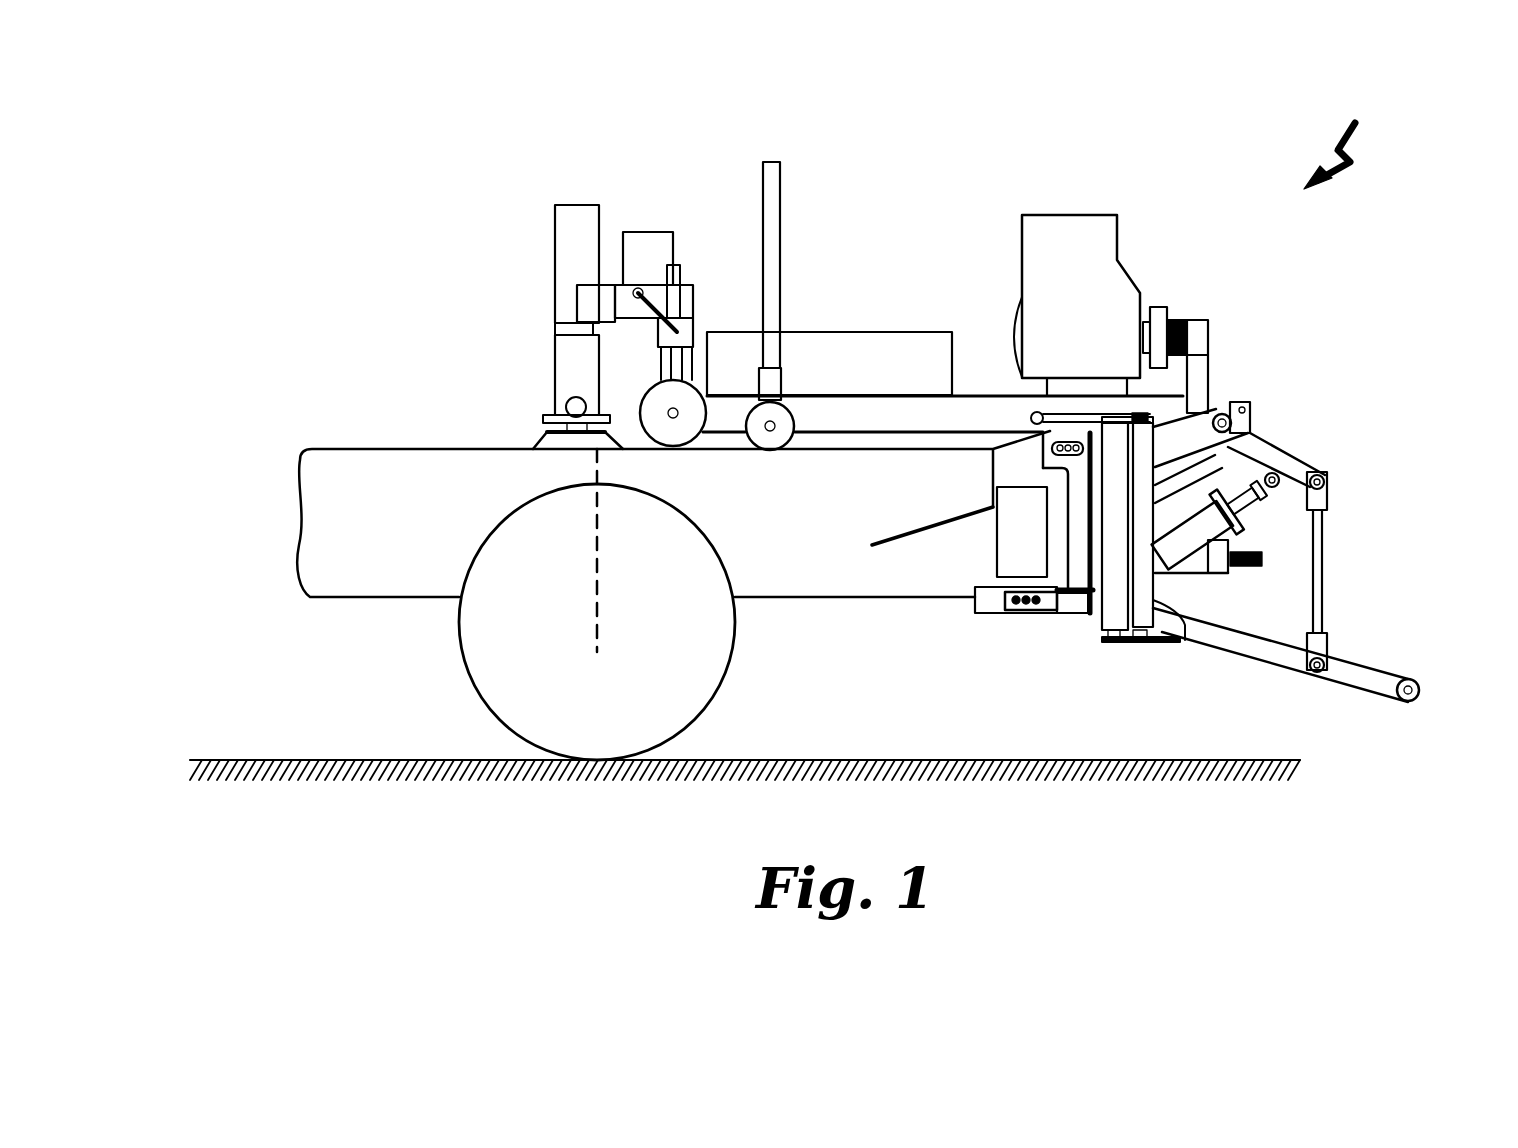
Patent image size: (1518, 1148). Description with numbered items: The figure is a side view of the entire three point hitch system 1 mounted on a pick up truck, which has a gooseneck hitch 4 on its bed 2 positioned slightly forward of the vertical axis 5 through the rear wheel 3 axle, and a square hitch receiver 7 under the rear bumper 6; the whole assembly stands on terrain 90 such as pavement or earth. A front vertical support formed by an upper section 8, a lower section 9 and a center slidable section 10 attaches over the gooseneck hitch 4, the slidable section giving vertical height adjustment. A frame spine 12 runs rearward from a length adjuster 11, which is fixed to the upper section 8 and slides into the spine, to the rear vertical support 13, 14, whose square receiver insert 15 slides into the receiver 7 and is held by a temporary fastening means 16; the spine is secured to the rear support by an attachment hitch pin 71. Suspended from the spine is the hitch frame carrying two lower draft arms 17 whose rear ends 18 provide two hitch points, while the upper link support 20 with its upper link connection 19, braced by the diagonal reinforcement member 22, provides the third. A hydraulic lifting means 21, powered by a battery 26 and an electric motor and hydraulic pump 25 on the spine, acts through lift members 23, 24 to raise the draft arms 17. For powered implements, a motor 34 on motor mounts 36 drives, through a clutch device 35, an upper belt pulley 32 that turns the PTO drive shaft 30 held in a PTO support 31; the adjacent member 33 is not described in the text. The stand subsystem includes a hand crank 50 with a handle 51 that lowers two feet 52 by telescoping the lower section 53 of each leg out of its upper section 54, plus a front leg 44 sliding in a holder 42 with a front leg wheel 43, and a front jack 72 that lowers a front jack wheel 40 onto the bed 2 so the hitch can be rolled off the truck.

The three point hitch system 1 is at (1340, 141).
The bed 2 is at (390, 449).
The rear wheel 3 is at (490, 643).
The gooseneck hitch 4 is at (533, 447).
The vertical axis 5 is at (597, 612).
The rear bumper 6 is at (1007, 560).
The square hitch receiver 7 is at (975, 615).
The upper section 8 is at (560, 233).
The lower section 9 is at (568, 357).
The center slidable section 10 is at (565, 326).
The length adjuster 11 is at (594, 303).
The frame spine 12 is at (962, 407).
The rear vertical support 13 is at (1077, 535).
The rear vertical support 14 is at (1065, 612).
The square receiver insert 15 is at (1032, 612).
The temporary fastening means 16 is at (1010, 616).
The lower draft arms 17 is at (1372, 672).
The rear ends of the arms 18 is at (1414, 675).
The upper link connection 19 is at (1190, 470).
The upper link support 20 is at (1228, 418).
The lifting means 21 is at (1212, 517).
The diagonal reinforcement member 22 is at (1268, 438).
The lift member 23 is at (1278, 452).
The lift member 24 is at (1318, 560).
The electric motor and hydraulic pump 25 is at (820, 340).
The battery 26 is at (648, 242).
The PTO drive shaft 30 is at (1262, 560).
The PTO support 31 is at (1205, 585).
The upper belt pulley 32 is at (1200, 328).
The support post 33 is at (1198, 380).
The motor 34 is at (1050, 262).
The clutch device 35 is at (1158, 318).
The motor mounts 36 is at (1072, 383).
The front jack wheel 40 is at (658, 415).
The holder 42 is at (777, 390).
The front leg wheel 43 is at (752, 413).
The front leg 44 is at (772, 172).
The hand crank 50 is at (990, 463).
The handle 51 is at (1032, 413).
The lowerable feet 52 is at (1123, 640).
The lower section of leg 53 is at (1143, 622).
The upper section of leg 54 is at (1185, 626).
The attachment hitch pin 71 is at (1045, 465).
The front jack 72 is at (682, 300).
The terrain 90 is at (300, 760).